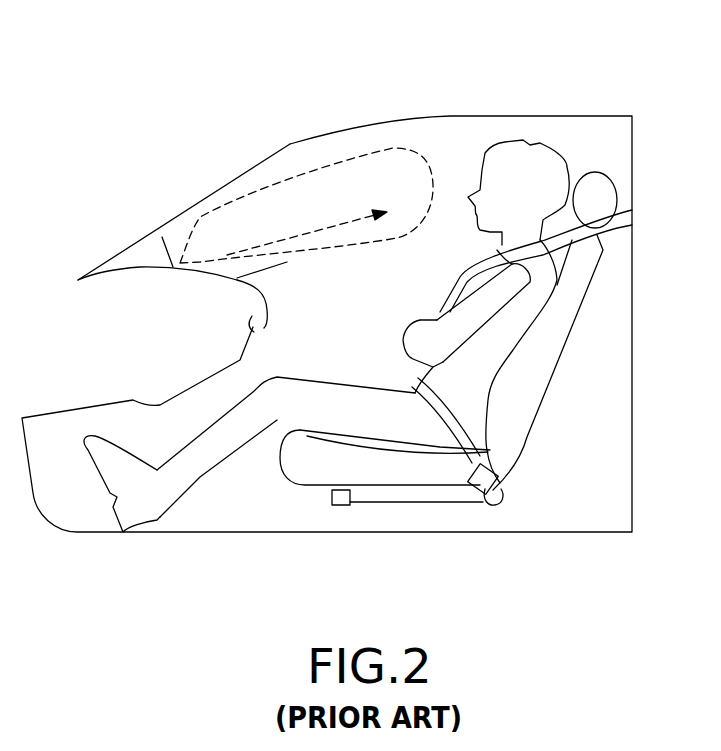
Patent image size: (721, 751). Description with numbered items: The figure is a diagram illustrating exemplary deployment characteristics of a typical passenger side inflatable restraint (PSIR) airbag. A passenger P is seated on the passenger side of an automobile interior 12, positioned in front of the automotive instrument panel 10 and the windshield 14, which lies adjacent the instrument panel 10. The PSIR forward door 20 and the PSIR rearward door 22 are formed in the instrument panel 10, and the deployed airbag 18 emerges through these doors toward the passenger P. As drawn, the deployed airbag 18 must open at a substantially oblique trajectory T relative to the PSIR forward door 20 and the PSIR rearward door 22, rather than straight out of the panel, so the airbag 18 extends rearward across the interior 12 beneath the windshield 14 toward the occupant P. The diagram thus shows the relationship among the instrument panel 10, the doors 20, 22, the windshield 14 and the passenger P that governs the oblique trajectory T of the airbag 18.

The automotive instrument panel 10 is at (140, 267).
The automotive interior 12 is at (567, 145).
The windshield 14 is at (233, 173).
The deployed airbag 18 is at (395, 148).
The PSIR forward door 20 is at (157, 267).
The PSIR rearward door 22 is at (293, 280).
The passenger P is at (487, 363).
The oblique trajectory T is at (307, 232).